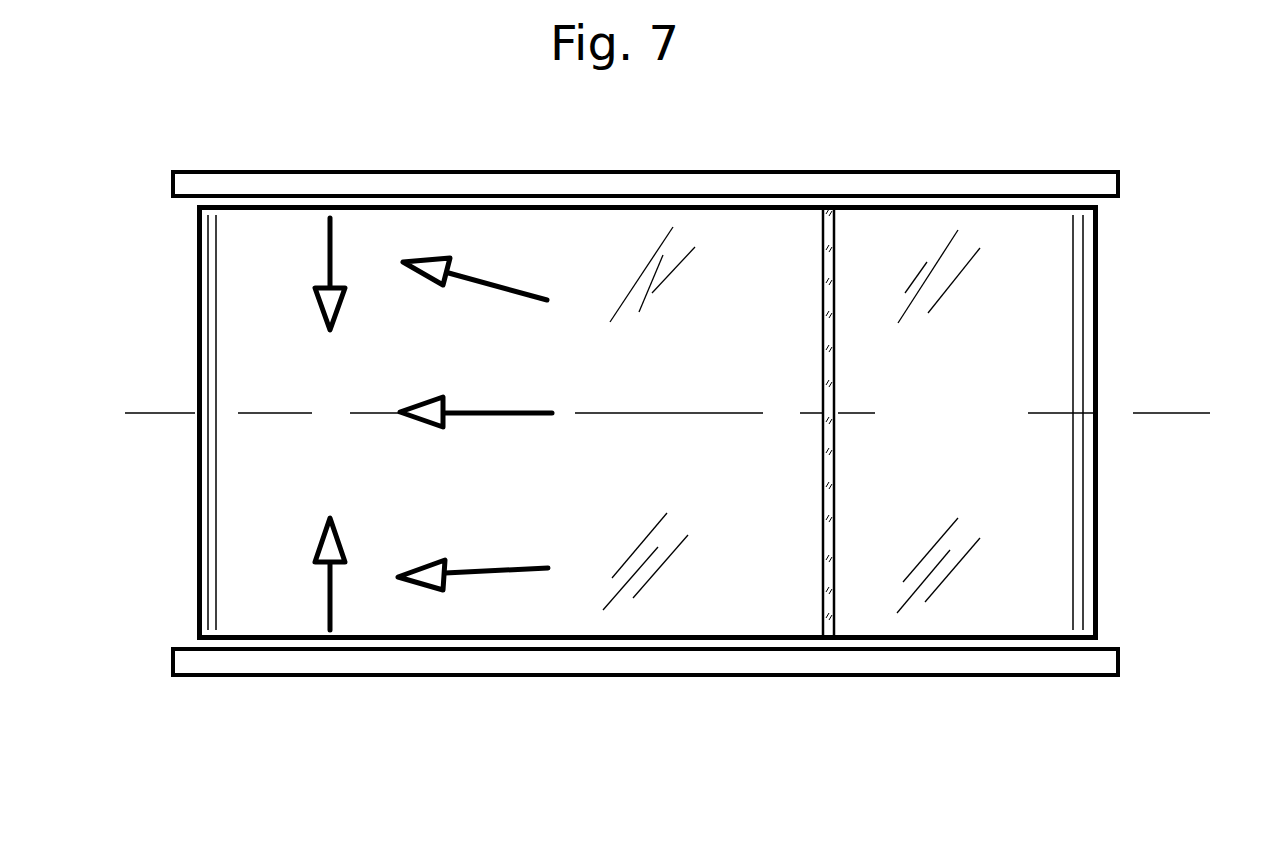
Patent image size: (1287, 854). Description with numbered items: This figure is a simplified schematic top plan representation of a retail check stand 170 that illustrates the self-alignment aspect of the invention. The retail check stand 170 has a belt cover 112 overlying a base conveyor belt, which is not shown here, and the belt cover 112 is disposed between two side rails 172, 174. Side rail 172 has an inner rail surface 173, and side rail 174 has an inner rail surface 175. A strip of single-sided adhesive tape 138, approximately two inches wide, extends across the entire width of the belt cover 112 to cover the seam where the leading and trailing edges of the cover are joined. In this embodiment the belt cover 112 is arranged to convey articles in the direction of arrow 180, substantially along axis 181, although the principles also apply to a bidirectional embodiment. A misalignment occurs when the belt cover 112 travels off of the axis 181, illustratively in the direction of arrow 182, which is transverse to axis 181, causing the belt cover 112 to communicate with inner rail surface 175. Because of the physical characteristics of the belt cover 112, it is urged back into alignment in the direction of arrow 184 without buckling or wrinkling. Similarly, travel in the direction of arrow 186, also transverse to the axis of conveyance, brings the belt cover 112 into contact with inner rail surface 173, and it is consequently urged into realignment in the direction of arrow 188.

The retail check stand 170 is at (994, 767).
The side rail 172 is at (706, 666).
The inner rail surface 173 is at (463, 640).
The side rail 174 is at (720, 182).
The inner rail surface 175 is at (482, 203).
The single-sided adhesive tape 138 is at (828, 247).
The belt cover 112 is at (920, 240).
The axis 181 is at (1133, 413).
The arrow 180 is at (480, 414).
The arrow 182 is at (453, 277).
The arrow 186 is at (485, 573).
The arrow 184 is at (330, 258).
The arrow 188 is at (330, 592).